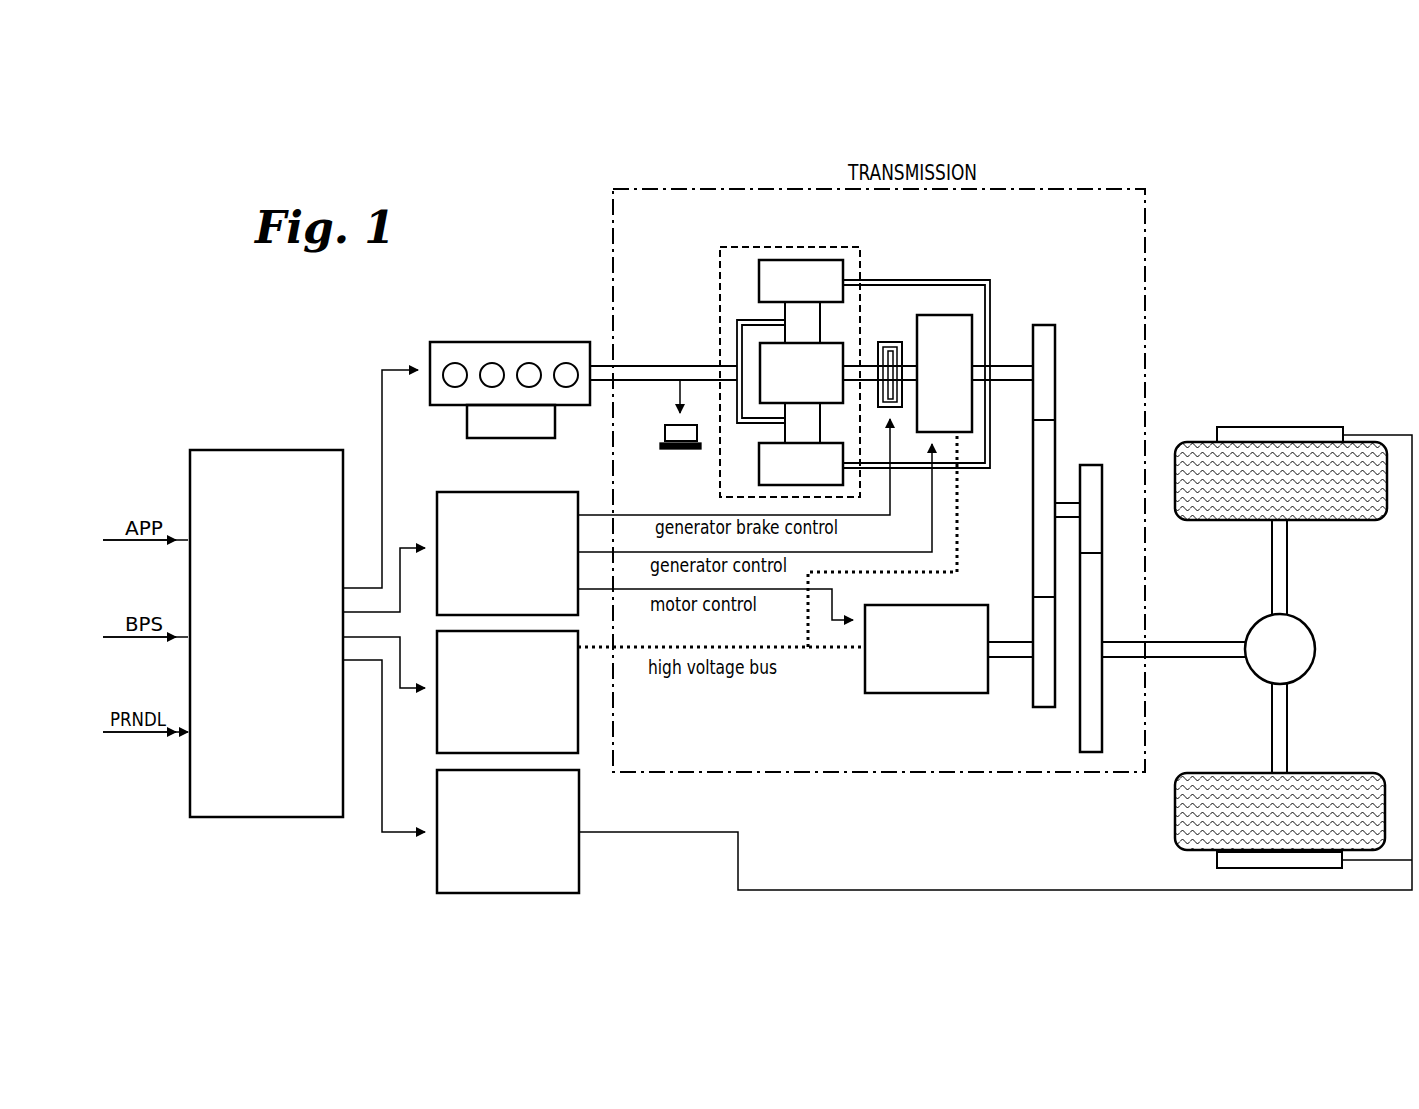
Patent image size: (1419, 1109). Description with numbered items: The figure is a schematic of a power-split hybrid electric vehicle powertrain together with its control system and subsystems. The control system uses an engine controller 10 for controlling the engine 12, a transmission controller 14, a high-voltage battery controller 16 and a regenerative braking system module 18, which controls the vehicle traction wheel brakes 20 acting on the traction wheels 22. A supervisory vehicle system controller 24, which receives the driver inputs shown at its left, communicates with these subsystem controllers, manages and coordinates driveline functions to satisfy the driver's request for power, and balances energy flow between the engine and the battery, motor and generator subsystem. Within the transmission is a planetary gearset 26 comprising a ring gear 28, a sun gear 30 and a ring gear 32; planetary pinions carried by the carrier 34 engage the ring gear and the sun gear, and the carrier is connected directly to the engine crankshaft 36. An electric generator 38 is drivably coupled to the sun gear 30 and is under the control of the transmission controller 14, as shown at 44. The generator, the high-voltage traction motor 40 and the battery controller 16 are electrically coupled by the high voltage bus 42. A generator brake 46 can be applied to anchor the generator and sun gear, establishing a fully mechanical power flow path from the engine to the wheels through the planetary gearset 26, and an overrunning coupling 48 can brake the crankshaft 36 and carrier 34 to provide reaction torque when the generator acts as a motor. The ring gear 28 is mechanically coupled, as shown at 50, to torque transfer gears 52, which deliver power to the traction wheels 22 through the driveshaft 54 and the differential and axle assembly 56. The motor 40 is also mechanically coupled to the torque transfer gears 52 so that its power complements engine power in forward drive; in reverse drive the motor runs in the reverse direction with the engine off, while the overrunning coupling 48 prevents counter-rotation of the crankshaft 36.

The engine controller (ECM) 10 is at (530, 438).
The engine 12 is at (458, 342).
The transmission controller (TCM) 14 is at (437, 507).
The high-voltage battery controller (BCM) 16 is at (437, 727).
The regenerative braking system module (BSM) 18 is at (437, 865).
The vehicle traction wheel brakes 20 is at (1310, 427).
The vehicle traction wheels 22 is at (1330, 521).
The supervisory vehicle system controller 24 is at (263, 450).
The planetary gearset 26 is at (860, 247).
The ring gear 28 is at (759, 282).
The sun gear 30 is at (737, 355).
The ring gear 32 is at (759, 470).
The carrier 34 is at (737, 325).
The engine crankshaft 36 is at (605, 365).
The electric generator 38 is at (945, 315).
The high-voltage traction motor 40 is at (922, 693).
The high voltage bus 42 is at (805, 617).
The generator control 44 is at (863, 552).
The generator brake 46 is at (900, 344).
The overrunning coupling 48 is at (668, 423).
The mechanical coupling 50 is at (992, 310).
The torque transfer gears 52 is at (1066, 432).
The driveshaft 54 is at (1204, 644).
The differential and axle assembly 56 is at (1304, 635).